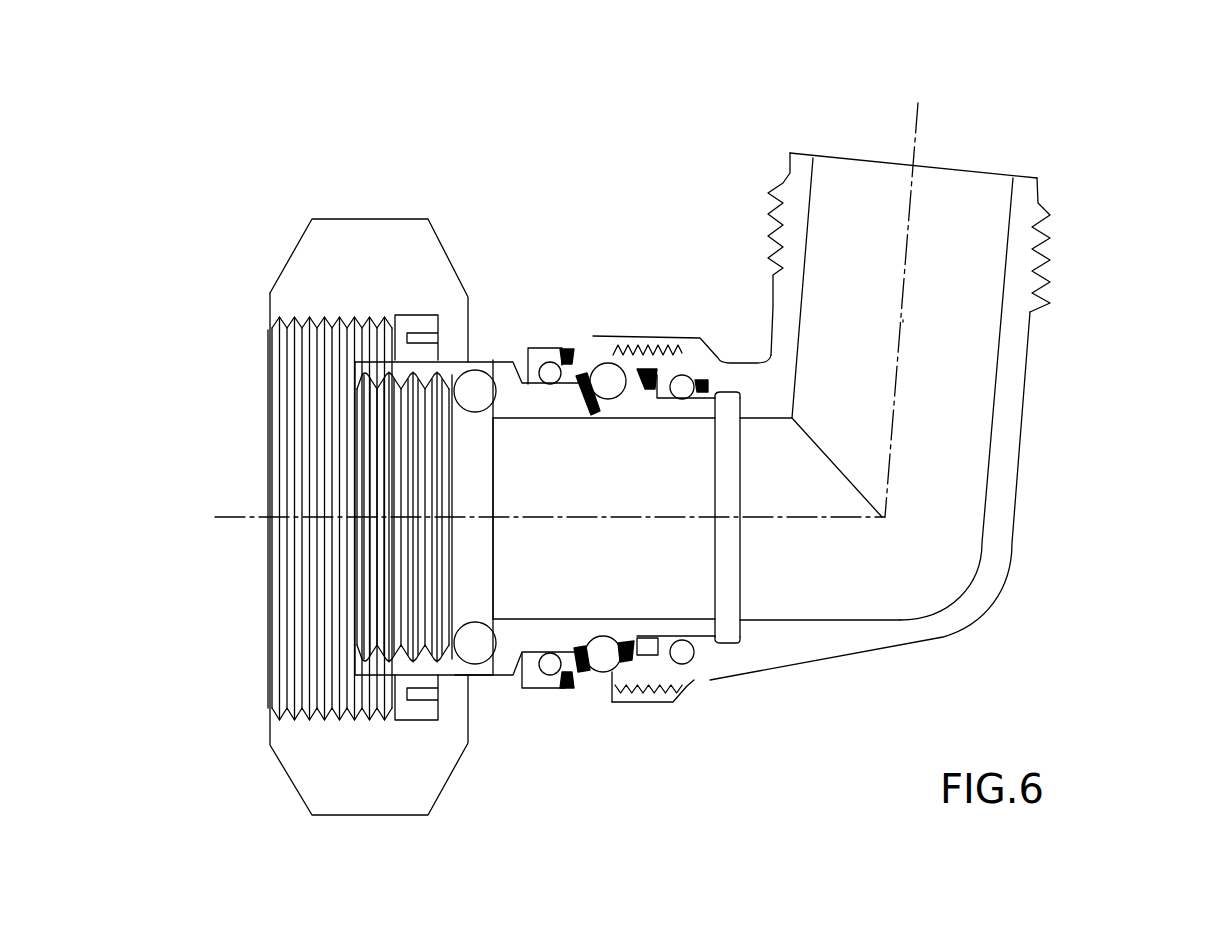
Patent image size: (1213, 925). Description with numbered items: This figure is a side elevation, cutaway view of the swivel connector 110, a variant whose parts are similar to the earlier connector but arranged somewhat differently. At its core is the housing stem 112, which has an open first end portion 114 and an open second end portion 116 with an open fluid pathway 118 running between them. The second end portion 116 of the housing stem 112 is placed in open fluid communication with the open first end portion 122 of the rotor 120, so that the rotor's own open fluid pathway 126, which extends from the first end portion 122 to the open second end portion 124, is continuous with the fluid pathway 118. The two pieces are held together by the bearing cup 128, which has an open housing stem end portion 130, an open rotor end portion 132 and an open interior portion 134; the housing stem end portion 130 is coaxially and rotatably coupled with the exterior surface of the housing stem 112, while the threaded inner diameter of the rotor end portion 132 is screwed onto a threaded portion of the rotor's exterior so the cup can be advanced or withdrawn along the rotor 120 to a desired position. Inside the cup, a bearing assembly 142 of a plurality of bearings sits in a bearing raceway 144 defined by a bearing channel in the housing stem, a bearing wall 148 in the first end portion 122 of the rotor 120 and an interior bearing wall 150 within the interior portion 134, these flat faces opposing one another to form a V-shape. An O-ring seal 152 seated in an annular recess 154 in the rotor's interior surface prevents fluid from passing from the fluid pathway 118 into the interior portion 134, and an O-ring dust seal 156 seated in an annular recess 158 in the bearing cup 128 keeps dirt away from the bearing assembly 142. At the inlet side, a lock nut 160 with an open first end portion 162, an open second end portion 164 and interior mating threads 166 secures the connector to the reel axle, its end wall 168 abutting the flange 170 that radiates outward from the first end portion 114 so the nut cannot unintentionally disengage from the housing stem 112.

The swivel connector 110 is at (122, 135).
The housing stem 112 is at (513, 355).
The first end portion 114 is at (383, 713).
The second end portion 116 is at (718, 640).
The fluid pathway 118 is at (533, 517).
The rotor 120 is at (946, 617).
The first end portion 122 is at (636, 352).
The second end portion 124 is at (1040, 179).
The fluid pathway 126 is at (903, 320).
The bearing cup 128 is at (580, 372).
The housing stem end portion 130 is at (532, 352).
The rotor end portion 132 is at (657, 338).
The interior portion 134 is at (663, 355).
The bearing assembly 142 is at (608, 665).
The bearing raceway 144 is at (548, 672).
The bearing wall 148 is at (622, 642).
The interior bearing wall 150 is at (597, 405).
The O-ring seal 152 is at (697, 655).
The annular recess 154 is at (720, 386).
The O-ring dust seal 156 is at (577, 672).
The annular recess 158 is at (593, 348).
The lock nut 160 is at (433, 267).
The first end portion 162 is at (270, 293).
The second end portion 164 is at (477, 320).
The mating threads 166 is at (297, 605).
The end wall 168 is at (489, 680).
The flange 170 is at (397, 442).